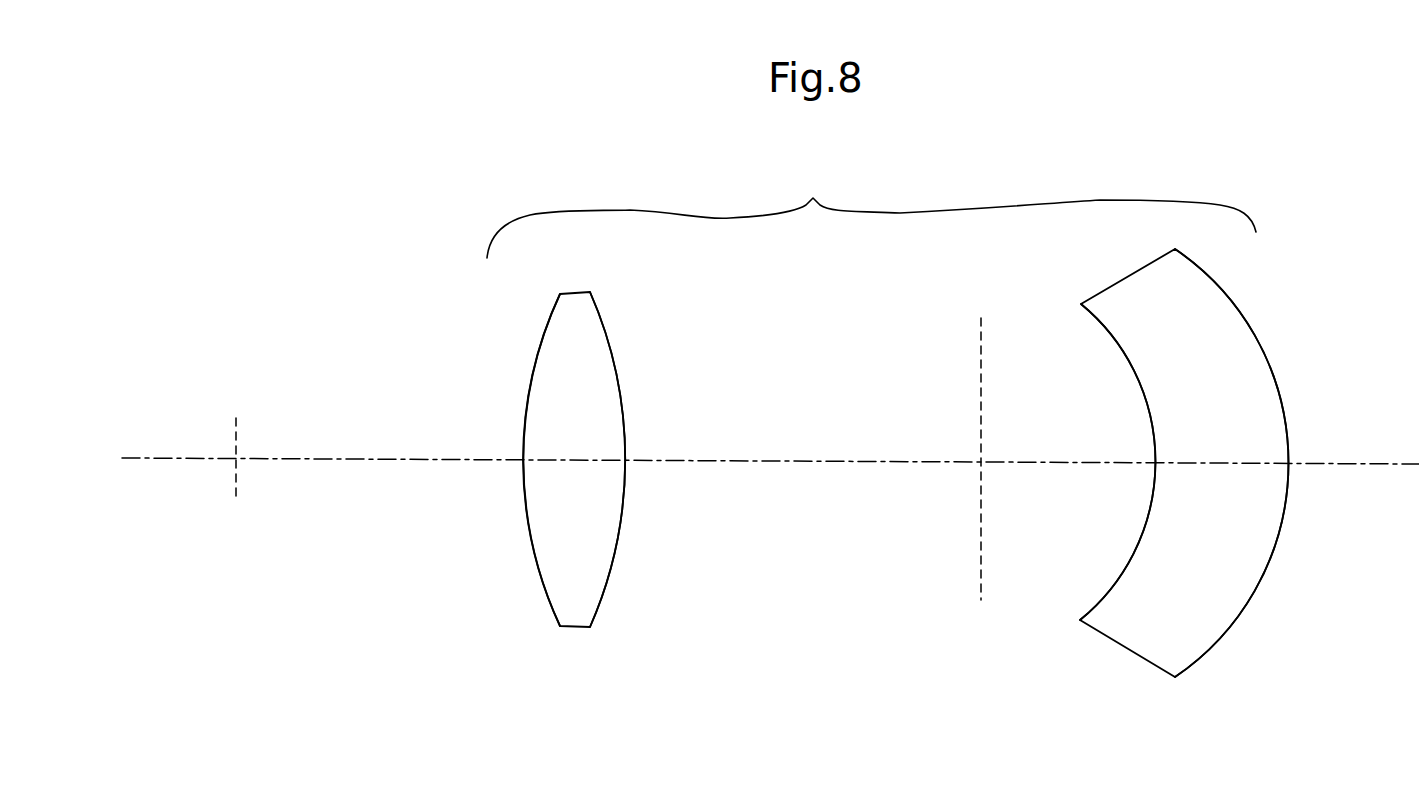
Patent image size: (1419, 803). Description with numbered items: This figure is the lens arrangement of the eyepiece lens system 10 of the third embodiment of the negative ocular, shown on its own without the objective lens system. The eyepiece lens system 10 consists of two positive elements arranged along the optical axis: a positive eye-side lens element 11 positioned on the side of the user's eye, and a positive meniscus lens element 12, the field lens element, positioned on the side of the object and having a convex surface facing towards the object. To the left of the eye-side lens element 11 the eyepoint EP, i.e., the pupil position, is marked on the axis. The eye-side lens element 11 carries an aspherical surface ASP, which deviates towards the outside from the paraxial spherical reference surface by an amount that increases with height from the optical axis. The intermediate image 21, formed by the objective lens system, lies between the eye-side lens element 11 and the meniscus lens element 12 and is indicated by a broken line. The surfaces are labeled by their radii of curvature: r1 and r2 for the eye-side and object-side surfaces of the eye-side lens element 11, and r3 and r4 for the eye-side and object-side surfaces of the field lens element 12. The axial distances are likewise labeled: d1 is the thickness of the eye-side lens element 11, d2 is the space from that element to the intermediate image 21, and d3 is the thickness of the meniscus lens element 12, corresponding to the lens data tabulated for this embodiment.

The eyepiece lens system 10 is at (871, 207).
The eye-side lens element 11 is at (595, 600).
The meniscus lens element 12 is at (1194, 653).
The intermediate image 21 is at (978, 585).
The eyepoint EP is at (241, 433).
The aspherical surface ASP is at (553, 316).
The radius of curvature of the eye-side surface of the eye-side lens element r1 is at (530, 553).
The radius of curvature of the object-side surface of the eye-side lens element r2 is at (615, 366).
The radius of curvature of the eye-side surface of the field lens element r3 is at (1137, 546).
The radius of curvature of the object-side surface of the field lens element r4 is at (1271, 367).
The lens thickness of the eye-side lens element d1 is at (574, 462).
The space between the eye-side lens element and the intermediate image d2 is at (847, 462).
The lens thickness of the field lens element d3 is at (1210, 463).